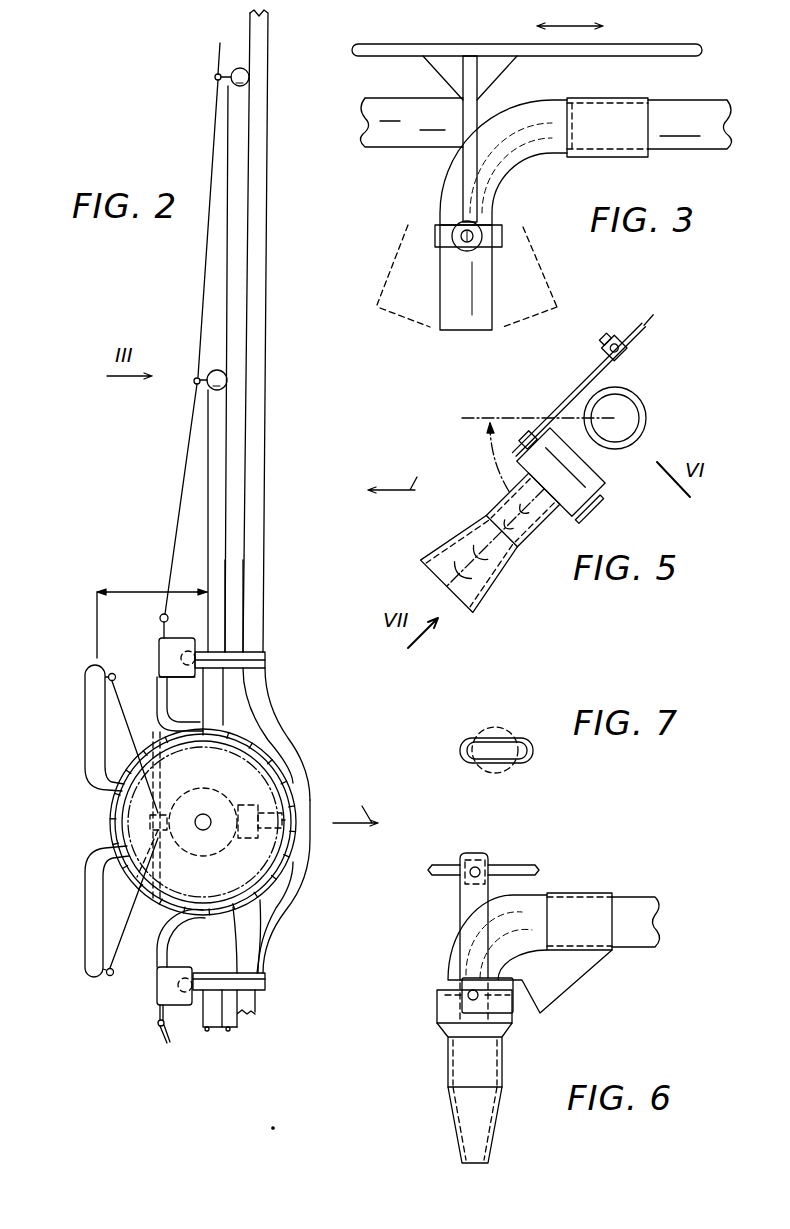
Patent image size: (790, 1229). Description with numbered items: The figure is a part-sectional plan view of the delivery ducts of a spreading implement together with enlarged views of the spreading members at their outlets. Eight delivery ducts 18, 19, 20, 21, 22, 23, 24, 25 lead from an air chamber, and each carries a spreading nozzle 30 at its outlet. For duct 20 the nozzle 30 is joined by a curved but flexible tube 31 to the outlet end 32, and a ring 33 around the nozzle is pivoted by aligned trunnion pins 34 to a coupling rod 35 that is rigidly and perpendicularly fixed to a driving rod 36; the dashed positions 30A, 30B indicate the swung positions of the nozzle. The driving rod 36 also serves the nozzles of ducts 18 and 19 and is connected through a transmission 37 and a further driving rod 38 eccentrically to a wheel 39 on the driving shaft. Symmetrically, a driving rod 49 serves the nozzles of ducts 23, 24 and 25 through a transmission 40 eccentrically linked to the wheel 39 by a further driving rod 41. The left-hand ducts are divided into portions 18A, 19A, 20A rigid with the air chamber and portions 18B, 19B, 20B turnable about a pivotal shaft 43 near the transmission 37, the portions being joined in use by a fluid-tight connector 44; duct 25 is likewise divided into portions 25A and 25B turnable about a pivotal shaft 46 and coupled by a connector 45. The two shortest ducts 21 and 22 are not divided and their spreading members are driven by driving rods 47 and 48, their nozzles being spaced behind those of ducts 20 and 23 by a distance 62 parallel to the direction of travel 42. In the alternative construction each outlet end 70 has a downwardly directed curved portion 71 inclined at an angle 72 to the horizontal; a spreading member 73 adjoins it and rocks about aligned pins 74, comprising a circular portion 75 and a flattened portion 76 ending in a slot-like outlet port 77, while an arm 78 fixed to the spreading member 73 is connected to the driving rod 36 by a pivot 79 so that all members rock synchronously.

In FIG. 2, the delivery duct 18 is at (297, 742).
In FIG. 2, the duct portion A 18A is at (255, 693).
In FIG. 2, the duct portion B 18B is at (262, 197).
In FIG. 2, the delivery duct 19 is at (233, 598).
In FIG. 2, the duct portion A 19A is at (233, 737).
In FIG. 2, the duct portion B 19B is at (245, 315).
In FIG. 3, the duct portion B 19B is at (393, 88).
In FIG. 2, the delivery duct 20 is at (208, 552).
In FIG. 2, the duct portion A 20A is at (188, 713).
In FIG. 2, the duct portion B 20B is at (208, 442).
In FIG. 3, the duct portion B 20B is at (683, 110).
In FIG. 2, the delivery duct 21 is at (88, 712).
In FIG. 2, the delivery duct 22 is at (86, 895).
In FIG. 2, the delivery duct 23 is at (207, 1031).
In FIG. 2, the delivery duct 24 is at (228, 1031).
In FIG. 2, the delivery duct 25 is at (256, 1014).
In FIG. 2, the duct portion A 25A is at (286, 913).
In FIG. 2, the duct portion B 25B is at (258, 1003).
In FIG. 3, the spreading nozzle 30 is at (462, 330).
In FIG. 3, the pivoted pipe position 30A is at (380, 310).
In FIG. 3, the pivoted pipe position 30B is at (560, 287).
In FIG. 3, the flexible tube 31 is at (527, 157).
In FIG. 3, the outlet end 32 is at (630, 155).
In FIG. 3, the ring 33 is at (440, 227).
In FIG. 3, the trunnion pins 34 is at (490, 237).
In FIG. 3, the coupling rod 35 is at (463, 110).
In FIG. 2, the driving rod 36 is at (182, 484).
In FIG. 3, the driving rod 36 is at (458, 36).
In FIG. 5, the driving rod 36 is at (623, 335).
In FIG. 6, the driving rod 36 is at (520, 866).
In FIG. 2, the transmission 37 is at (163, 645).
In FIG. 2, the further driving rod 38 is at (160, 689).
In FIG. 2, the wheel 39 is at (172, 776).
In FIG. 2, the transmission 40 is at (157, 993).
In FIG. 2, the further driving rod 41 is at (157, 958).
In FIG. 2, the direction of operative travel 42 is at (355, 804).
In FIG. 5, the direction of operative travel 42 is at (392, 476).
In FIG. 2, the pivotal shaft 43 is at (190, 636).
In FIG. 2, the fluid-tight connector 44 is at (276, 660).
In FIG. 2, the fluid-tight connector 45 is at (276, 980).
In FIG. 2, the pivotal shaft 46 is at (172, 1006).
In FIG. 2, the driving rod 47 is at (128, 720).
In FIG. 2, the driving rod 48 is at (128, 920).
In FIG. 2, the driving rod 49 is at (162, 1033).
In FIG. 2, the distance 62 is at (140, 591).
In FIG. 5, the outlet end 70 is at (633, 413).
In FIG. 6, the outlet end 70 is at (617, 907).
In FIG. 5, the curved portion 71 is at (610, 468).
In FIG. 6, the curved portion 71 is at (478, 930).
In FIG. 5, the angle 72 is at (493, 457).
In FIG. 5, the spreading member 73 is at (500, 503).
In FIG. 7, the spreading member 73 is at (498, 733).
In FIG. 6, the spreading member 73 is at (450, 1060).
In FIG. 5, the pins 74 is at (598, 510).
In FIG. 6, the pins 74 is at (473, 989).
In FIG. 5, the portion of circular cross-section 75 is at (540, 530).
In FIG. 5, the flattened portion 76 is at (493, 590).
In FIG. 5, the slot-like outlet port 77 is at (437, 568).
In FIG. 7, the slot-like outlet port 77 is at (460, 751).
In FIG. 6, the slot-like outlet port 77 is at (460, 1158).
In FIG. 5, the arm 78 is at (603, 378).
In FIG. 6, the arm 78 is at (463, 890).
In FIG. 5, the pivot 79 is at (630, 363).
In FIG. 6, the pivot 79 is at (476, 866).